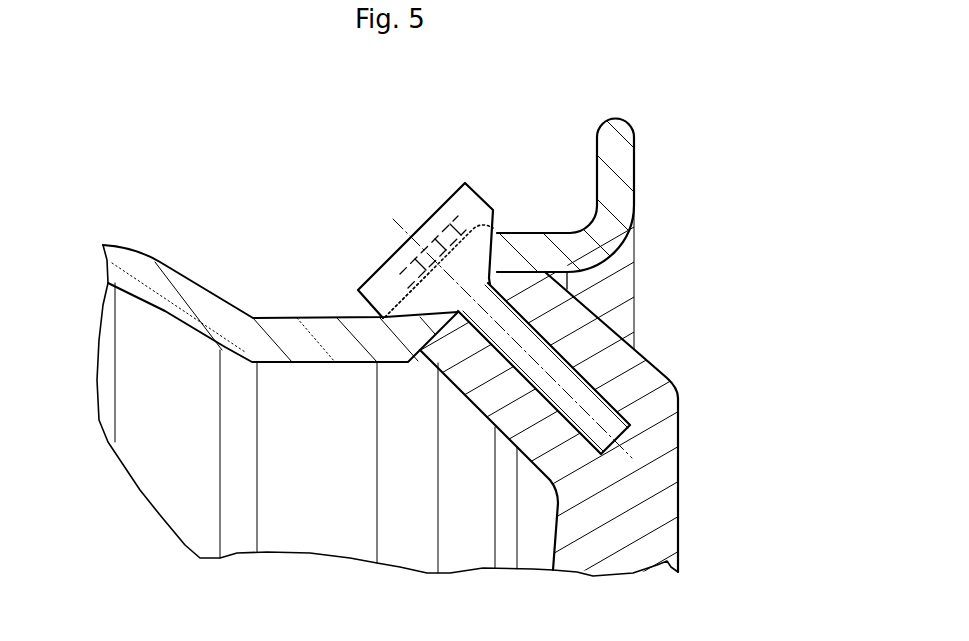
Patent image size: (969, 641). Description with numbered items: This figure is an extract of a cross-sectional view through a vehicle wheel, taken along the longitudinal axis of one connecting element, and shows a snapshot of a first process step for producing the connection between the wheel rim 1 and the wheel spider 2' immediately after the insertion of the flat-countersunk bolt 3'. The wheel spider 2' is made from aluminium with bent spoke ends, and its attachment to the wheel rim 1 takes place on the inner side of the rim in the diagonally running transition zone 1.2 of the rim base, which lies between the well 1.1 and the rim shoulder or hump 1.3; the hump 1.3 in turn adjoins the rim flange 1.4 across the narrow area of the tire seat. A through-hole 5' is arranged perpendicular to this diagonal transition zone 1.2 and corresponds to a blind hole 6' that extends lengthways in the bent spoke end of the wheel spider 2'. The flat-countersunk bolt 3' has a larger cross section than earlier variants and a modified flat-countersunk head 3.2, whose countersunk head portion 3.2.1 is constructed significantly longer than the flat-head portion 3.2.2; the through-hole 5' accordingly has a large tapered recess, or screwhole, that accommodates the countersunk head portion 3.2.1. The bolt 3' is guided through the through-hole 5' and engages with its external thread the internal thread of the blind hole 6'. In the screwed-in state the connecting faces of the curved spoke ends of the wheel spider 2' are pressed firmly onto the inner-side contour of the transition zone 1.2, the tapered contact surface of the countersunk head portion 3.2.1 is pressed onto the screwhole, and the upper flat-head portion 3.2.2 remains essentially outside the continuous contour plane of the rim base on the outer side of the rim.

The wheel rim 1 is at (622, 197).
The well 1.1 is at (327, 333).
The transition zone 1.2 is at (450, 259).
The rim shoulder (hump) 1.3 is at (497, 232).
The rim flange 1.4 is at (635, 122).
The wheel spider 2' is at (590, 415).
The flat-countersunk bolt 3' is at (611, 218).
The flat-countersunk head 3.2 is at (625, 217).
The countersunk head portion 3.2.1 is at (473, 249).
The flat-head portion 3.2.2 is at (467, 203).
The through-hole 5' is at (673, 289).
The blind hole 6' is at (586, 338).